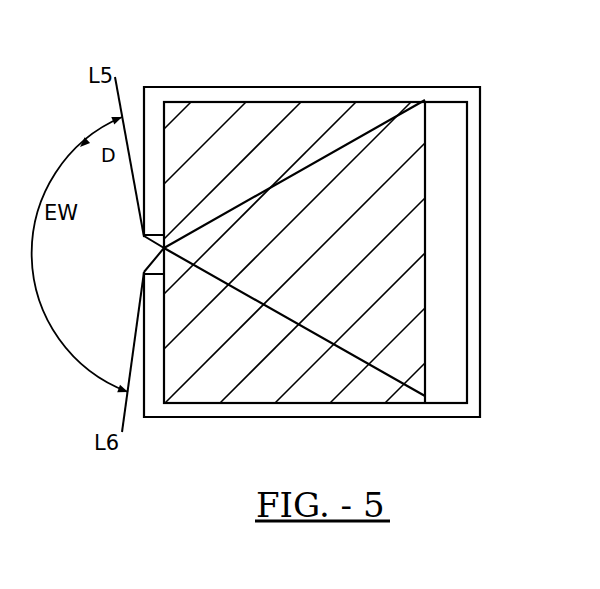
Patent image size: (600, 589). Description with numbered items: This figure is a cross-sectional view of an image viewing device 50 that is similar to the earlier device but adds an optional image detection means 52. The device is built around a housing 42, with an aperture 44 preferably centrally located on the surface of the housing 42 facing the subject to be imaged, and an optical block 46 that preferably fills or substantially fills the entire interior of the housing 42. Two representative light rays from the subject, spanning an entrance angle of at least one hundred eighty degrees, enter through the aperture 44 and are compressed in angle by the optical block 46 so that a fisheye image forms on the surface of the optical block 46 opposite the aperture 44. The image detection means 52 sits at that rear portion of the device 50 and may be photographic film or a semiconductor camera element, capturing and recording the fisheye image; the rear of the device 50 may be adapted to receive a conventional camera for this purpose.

The image viewing device 50 is at (295, 238).
The housing 42 is at (312, 418).
The aperture 44 is at (137, 253).
The optical block 46 is at (270, 352).
The image detection means 52 is at (460, 204).